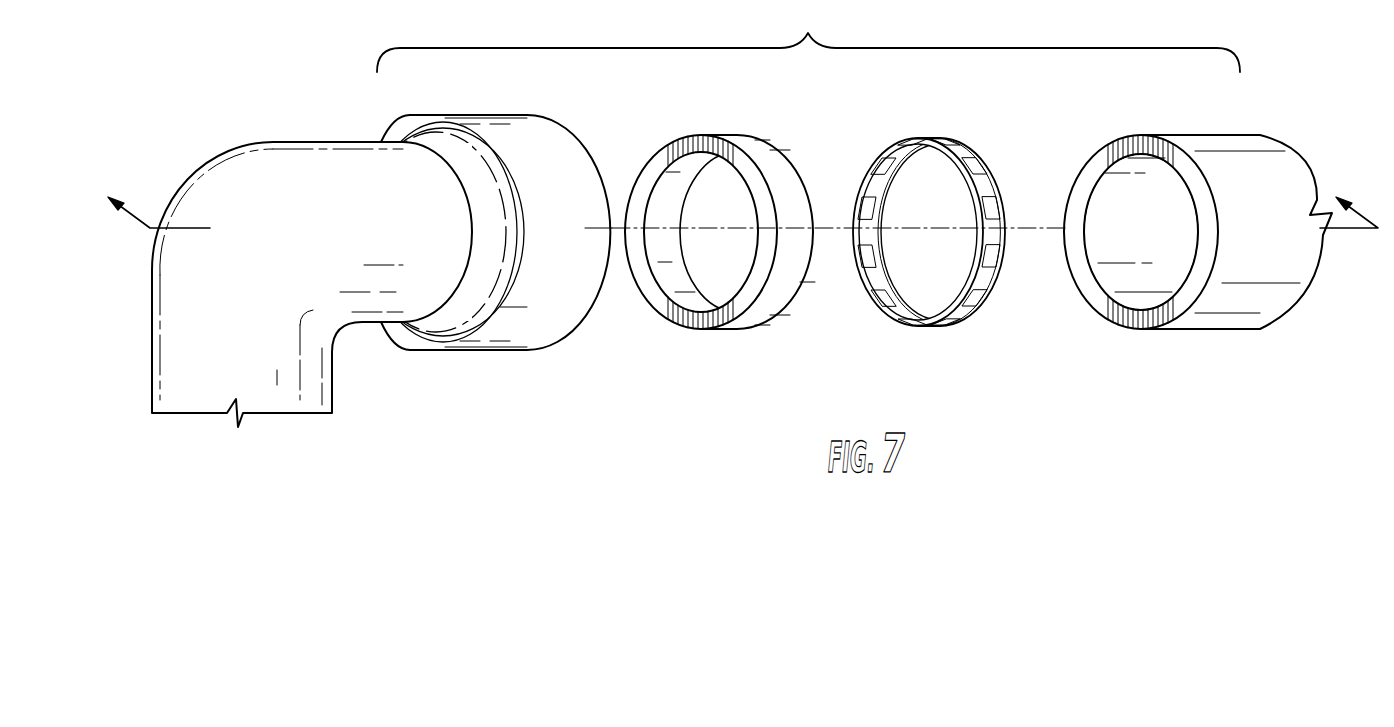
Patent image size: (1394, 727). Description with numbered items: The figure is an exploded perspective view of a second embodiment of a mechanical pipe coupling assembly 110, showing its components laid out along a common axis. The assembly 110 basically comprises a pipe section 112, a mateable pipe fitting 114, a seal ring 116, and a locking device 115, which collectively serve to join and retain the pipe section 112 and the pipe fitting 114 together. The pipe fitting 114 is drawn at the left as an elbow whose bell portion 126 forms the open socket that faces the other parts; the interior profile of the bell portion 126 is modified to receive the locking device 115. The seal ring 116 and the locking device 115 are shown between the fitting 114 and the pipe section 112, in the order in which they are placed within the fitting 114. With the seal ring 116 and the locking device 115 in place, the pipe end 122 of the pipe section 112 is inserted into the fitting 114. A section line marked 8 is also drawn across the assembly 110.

The mechanical pipe coupling assembly 110 is at (808, 36).
The pipe fitting 114 is at (345, 140).
The bell portion 126 is at (583, 252).
The seal ring 116 is at (728, 140).
The locking device 115 is at (945, 328).
The pipe section 112 is at (1137, 133).
The pipe end 122 is at (1105, 315).
The section line 8- 8 is at (739, 235).